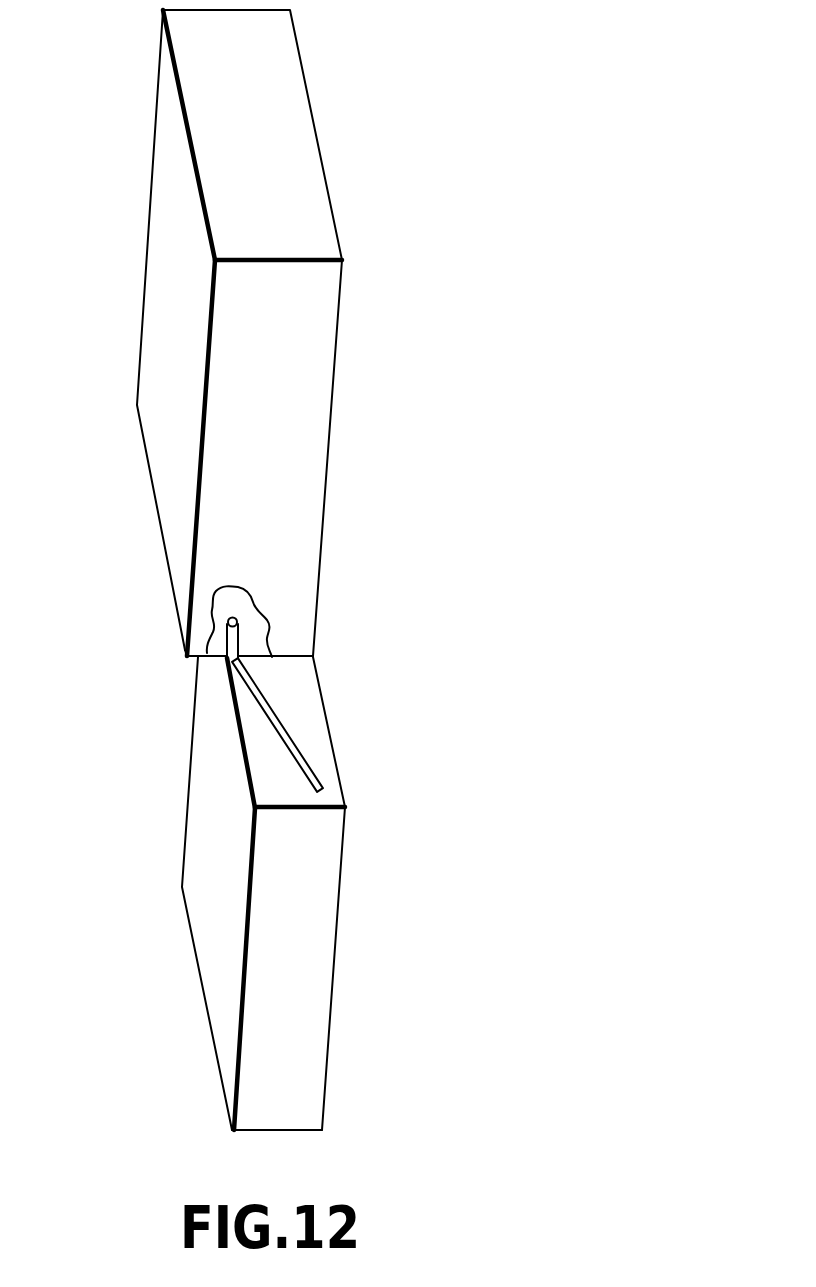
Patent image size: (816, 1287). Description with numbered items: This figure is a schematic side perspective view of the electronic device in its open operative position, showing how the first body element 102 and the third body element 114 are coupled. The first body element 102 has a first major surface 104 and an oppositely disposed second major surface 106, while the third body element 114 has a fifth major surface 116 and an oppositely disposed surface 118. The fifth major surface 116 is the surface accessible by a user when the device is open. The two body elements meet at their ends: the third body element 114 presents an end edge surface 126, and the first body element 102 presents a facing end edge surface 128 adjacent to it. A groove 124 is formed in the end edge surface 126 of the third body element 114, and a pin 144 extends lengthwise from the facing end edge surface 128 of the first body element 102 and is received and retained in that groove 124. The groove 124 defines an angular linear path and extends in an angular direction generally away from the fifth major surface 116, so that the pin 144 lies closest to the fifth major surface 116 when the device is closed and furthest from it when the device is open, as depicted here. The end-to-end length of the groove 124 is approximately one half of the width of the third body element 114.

The first body element 102 is at (320, 134).
The first major surface 104 is at (352, 339).
The second major surface 106 is at (162, 340).
The third body element 114 is at (335, 975).
The fifth major surface 116 is at (353, 849).
The oppositely disposed surface 118 is at (197, 833).
The groove 124 is at (293, 743).
The end edge surface 126 is at (231, 713).
The facing end edge surface 128 is at (168, 632).
The pin 144 is at (234, 616).